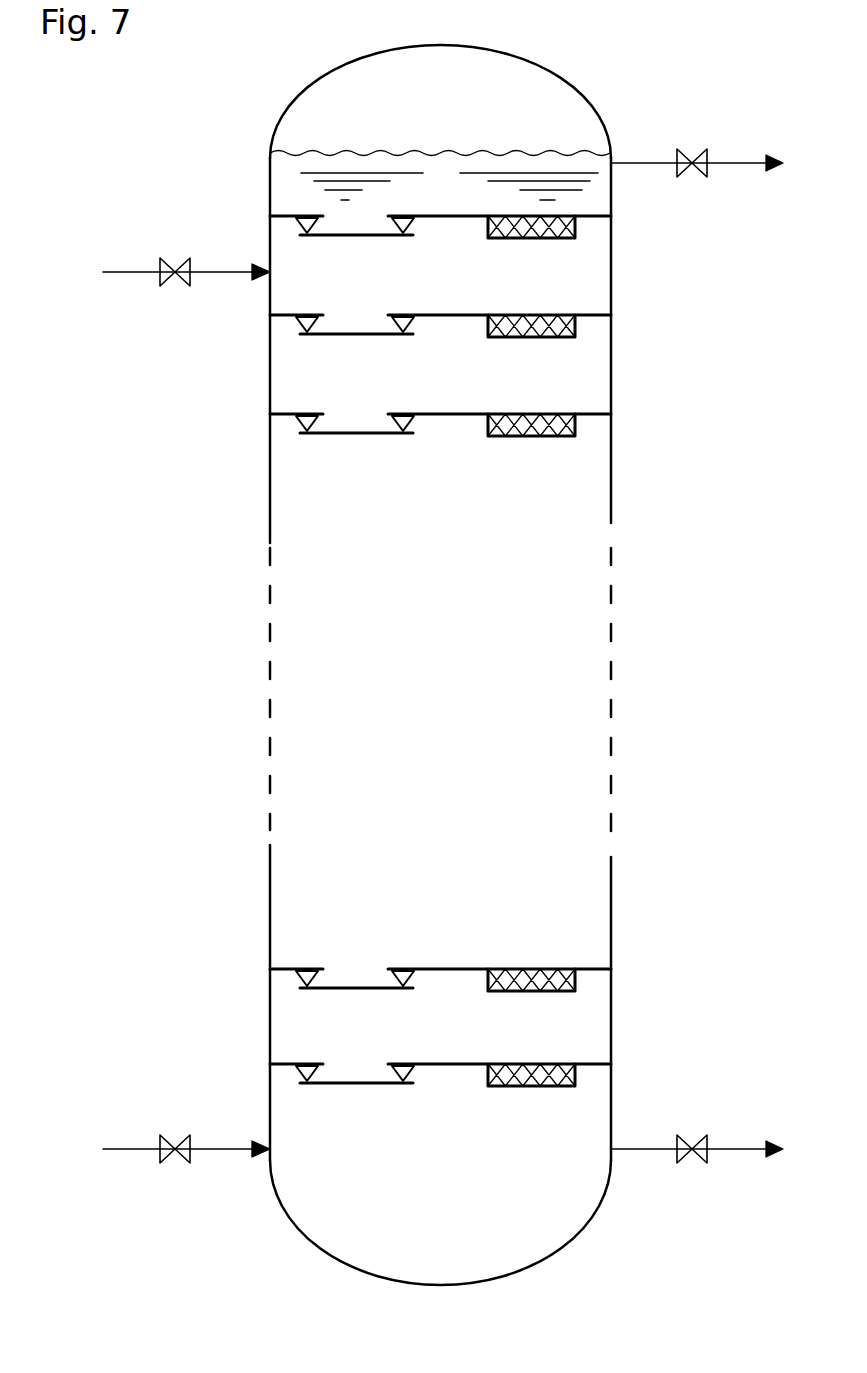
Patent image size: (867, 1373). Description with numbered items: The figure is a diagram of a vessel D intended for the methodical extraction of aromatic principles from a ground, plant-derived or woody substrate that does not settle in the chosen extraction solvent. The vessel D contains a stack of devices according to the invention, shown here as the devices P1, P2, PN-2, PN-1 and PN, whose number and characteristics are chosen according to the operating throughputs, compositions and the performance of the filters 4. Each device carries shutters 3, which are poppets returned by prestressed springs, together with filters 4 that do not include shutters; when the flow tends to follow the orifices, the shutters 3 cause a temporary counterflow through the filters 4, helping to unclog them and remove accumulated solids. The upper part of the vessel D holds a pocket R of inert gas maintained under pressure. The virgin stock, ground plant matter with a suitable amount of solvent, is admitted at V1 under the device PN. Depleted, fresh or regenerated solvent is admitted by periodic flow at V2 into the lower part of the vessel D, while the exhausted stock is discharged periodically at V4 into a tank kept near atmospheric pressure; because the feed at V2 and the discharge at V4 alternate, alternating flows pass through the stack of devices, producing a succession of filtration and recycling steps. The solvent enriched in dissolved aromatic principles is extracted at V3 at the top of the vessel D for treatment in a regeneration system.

The shutter 3 is at (353, 237).
The filter 4 is at (548, 238).
The pocket of inert gas R is at (520, 108).
The vessel D is at (272, 145).
The device PN is at (597, 216).
The device PN-1 is at (597, 315).
The device PN-2 is at (597, 414).
The device P2 is at (597, 969).
The device P1 is at (597, 1064).
The virgin stock inlet V1 is at (165, 257).
The solvent inlet V2 is at (165, 1135).
The enriched solvent outlet V3 is at (687, 175).
The exhausted stock discharge V4 is at (687, 1161).